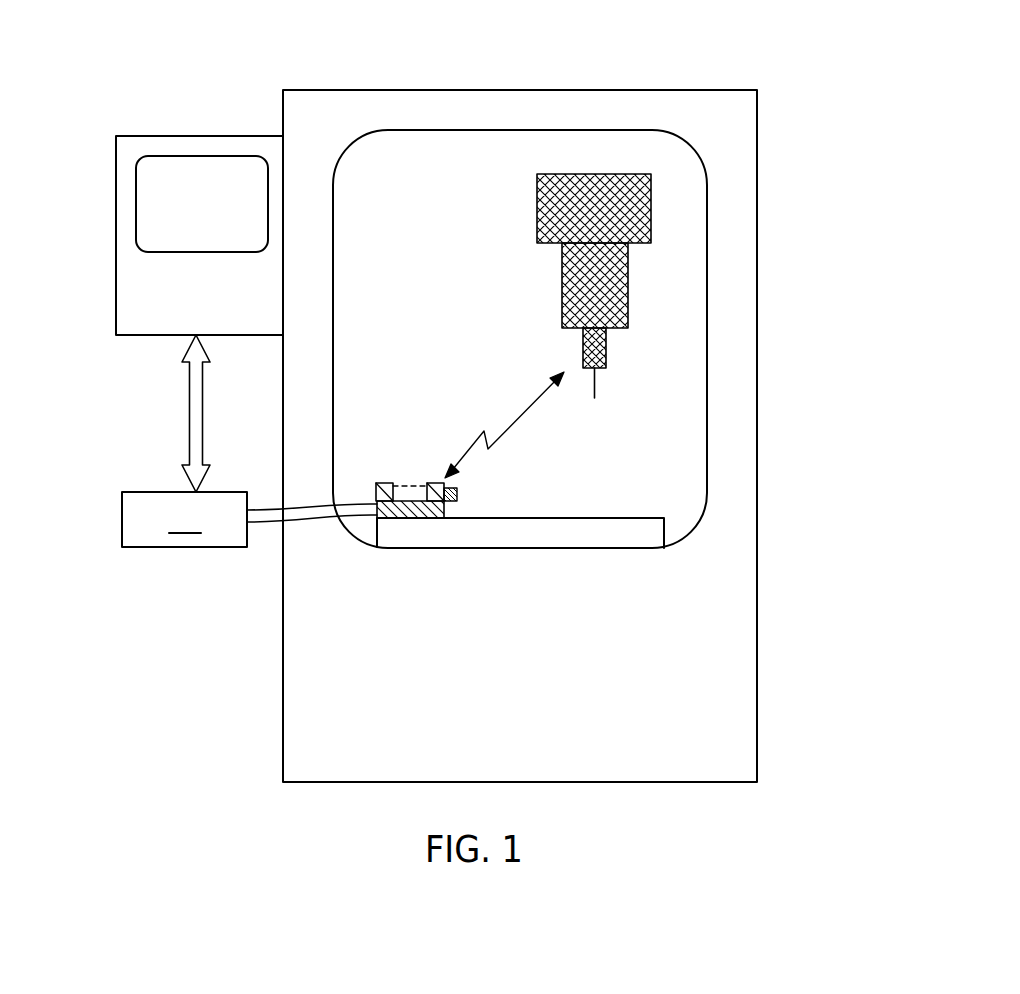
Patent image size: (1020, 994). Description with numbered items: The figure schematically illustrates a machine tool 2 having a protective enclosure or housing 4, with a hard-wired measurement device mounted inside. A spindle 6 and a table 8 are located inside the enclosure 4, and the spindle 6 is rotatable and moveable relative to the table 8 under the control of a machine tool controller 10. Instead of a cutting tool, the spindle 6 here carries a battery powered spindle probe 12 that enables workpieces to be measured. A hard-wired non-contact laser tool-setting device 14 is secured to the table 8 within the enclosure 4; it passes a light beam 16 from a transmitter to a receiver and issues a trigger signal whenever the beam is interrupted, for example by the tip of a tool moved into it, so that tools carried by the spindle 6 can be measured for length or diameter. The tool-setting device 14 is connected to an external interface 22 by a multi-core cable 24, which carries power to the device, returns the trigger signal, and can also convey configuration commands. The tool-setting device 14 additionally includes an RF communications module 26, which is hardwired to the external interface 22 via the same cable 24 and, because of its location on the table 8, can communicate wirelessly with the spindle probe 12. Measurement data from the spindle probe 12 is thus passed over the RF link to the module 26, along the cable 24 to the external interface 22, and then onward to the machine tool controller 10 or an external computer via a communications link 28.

The machine tool 2 is at (806, 66).
The protective enclosure 4 is at (757, 360).
The spindle 6 is at (628, 268).
The table 8 is at (587, 533).
The machine tool controller 10 is at (96, 269).
The spindle probe 12 is at (606, 350).
The tool-setting device 14 is at (460, 511).
The light beam 16 is at (402, 485).
The external interface 22 is at (184, 519).
The cable 24 is at (318, 524).
The RF communications module 26 is at (458, 488).
The communications link 28 is at (202, 420).